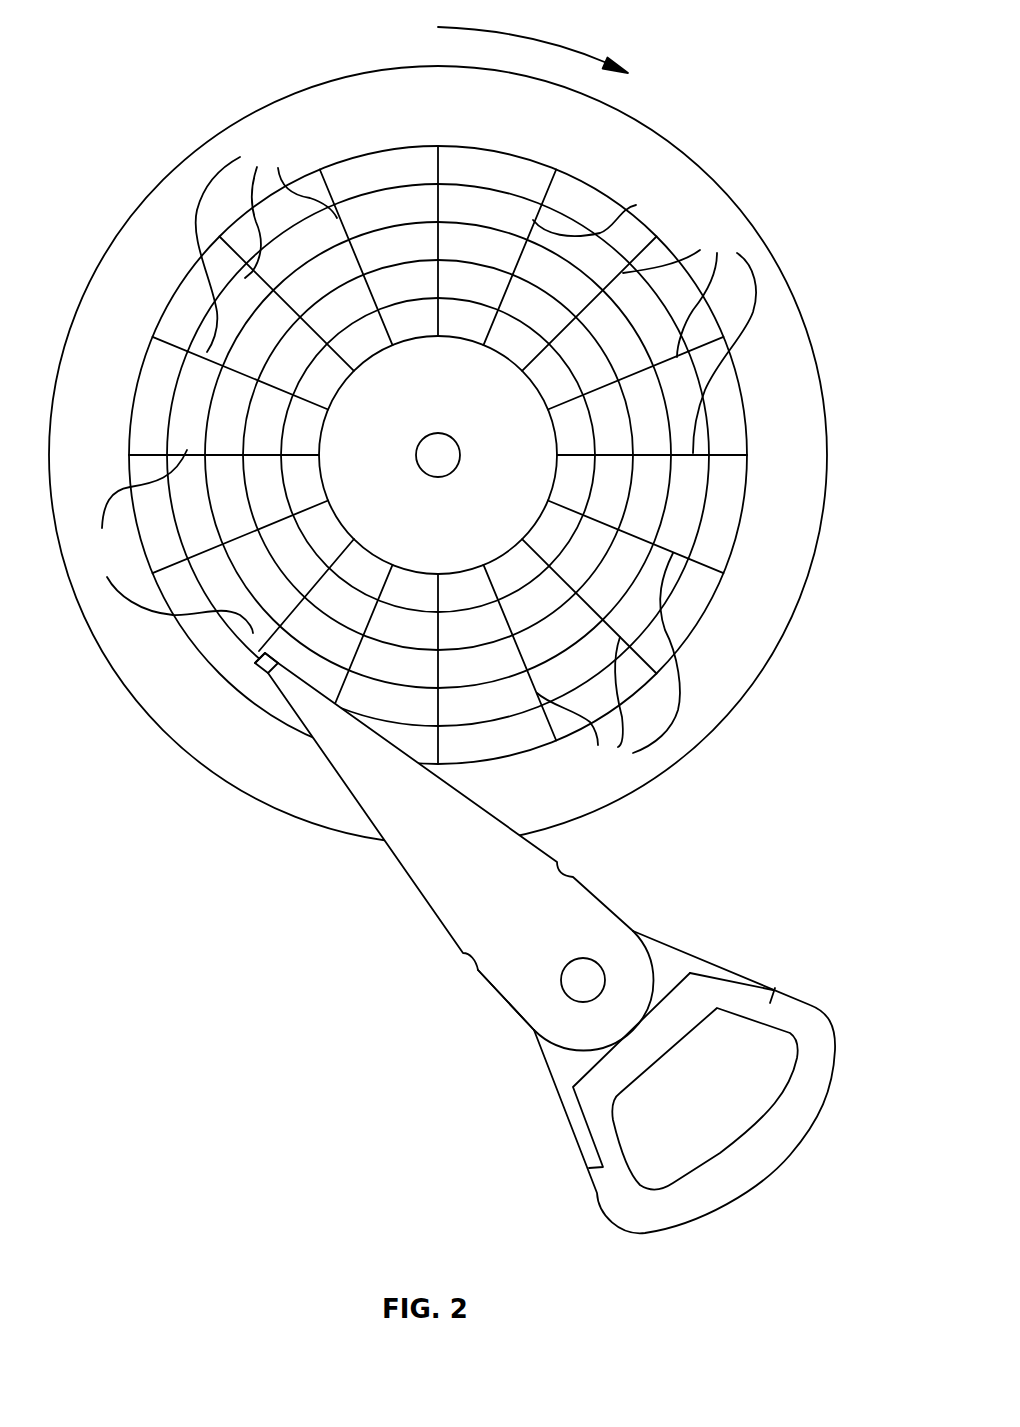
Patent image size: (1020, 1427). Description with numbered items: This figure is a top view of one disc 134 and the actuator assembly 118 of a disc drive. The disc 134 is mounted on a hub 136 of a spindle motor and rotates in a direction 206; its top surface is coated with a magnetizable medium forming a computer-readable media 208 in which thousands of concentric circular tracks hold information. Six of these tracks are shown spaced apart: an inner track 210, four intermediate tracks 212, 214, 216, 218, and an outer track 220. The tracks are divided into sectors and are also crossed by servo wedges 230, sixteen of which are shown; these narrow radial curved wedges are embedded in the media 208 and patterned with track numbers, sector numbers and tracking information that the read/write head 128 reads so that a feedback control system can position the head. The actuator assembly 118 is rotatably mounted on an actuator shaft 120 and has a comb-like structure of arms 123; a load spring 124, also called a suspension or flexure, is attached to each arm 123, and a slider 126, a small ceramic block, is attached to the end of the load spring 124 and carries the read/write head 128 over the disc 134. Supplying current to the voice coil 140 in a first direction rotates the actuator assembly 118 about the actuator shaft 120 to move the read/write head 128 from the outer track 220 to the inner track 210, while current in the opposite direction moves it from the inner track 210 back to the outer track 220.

The actuator assembly 118 is at (515, 939).
The actuator shaft 120 is at (592, 957).
The arm 123 is at (508, 1000).
The load spring 124 is at (491, 813).
The slider 126 is at (263, 677).
The read/write head 128 is at (252, 657).
The disc 134 is at (682, 155).
The hub 136 is at (448, 435).
The voice coil 140 is at (838, 1042).
The direction 206 is at (530, 38).
The computer-readable media 208 is at (368, 121).
The inner track 210 is at (475, 157).
The intermediate track 212 is at (539, 157).
The intermediate track 214 is at (633, 420).
The intermediate track 216 is at (673, 488).
The intermediate track 218 is at (700, 537).
The outer track 220 is at (703, 617).
The servo wedge 230 is at (441, 200).